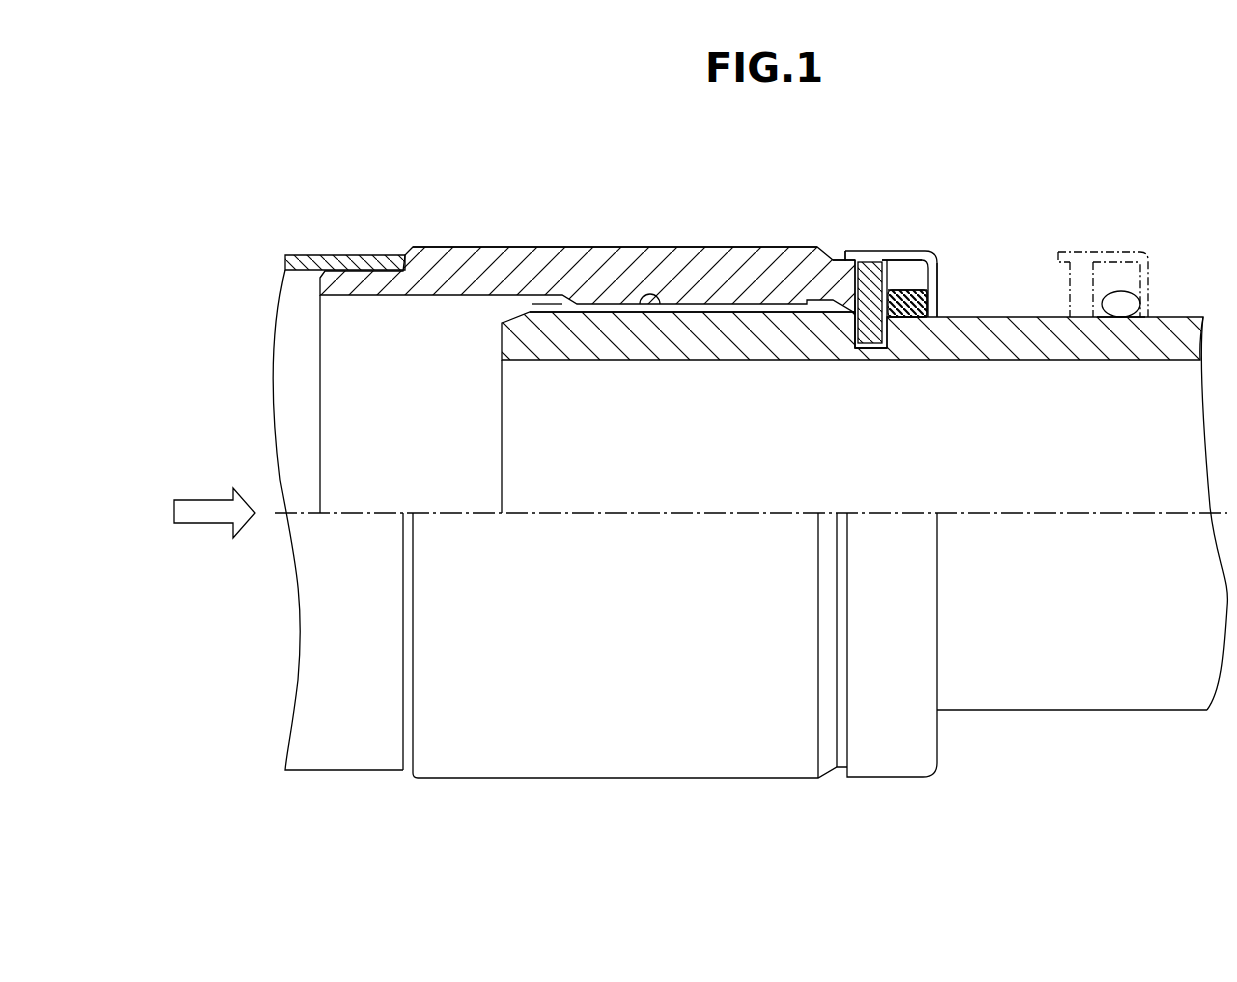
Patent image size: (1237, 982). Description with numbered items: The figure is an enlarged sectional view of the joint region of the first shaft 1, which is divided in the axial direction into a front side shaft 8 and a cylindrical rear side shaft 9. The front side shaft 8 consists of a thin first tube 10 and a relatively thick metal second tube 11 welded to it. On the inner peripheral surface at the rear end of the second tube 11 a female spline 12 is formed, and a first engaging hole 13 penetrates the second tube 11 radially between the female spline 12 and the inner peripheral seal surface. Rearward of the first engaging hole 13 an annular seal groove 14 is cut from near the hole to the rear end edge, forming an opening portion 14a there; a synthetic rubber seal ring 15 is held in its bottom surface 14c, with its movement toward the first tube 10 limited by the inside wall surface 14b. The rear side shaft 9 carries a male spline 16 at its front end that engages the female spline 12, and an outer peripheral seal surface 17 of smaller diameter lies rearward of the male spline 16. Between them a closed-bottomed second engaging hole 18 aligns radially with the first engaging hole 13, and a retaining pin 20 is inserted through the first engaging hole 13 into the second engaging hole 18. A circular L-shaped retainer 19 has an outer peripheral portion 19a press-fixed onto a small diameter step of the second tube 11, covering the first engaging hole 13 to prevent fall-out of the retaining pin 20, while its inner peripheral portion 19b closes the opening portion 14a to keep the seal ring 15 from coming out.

The first shaft 1 is at (558, 787).
The front side shaft 8 is at (446, 247).
The rear side shaft 9 is at (1137, 712).
The first tube 10 is at (323, 256).
The second tube 11 is at (592, 258).
The female spline 12 is at (700, 318).
The first engaging hole 13 is at (845, 258).
The annular seal groove 14 is at (895, 258).
The opening portion 14a is at (928, 292).
The inside wall surface 14b is at (890, 320).
The bottom surface 14c is at (915, 290).
The seal ring 15 is at (900, 318).
The male spline 16 is at (645, 308).
The outer peripheral seal surface 17 is at (912, 318).
The second engaging hole 18 is at (863, 345).
The retainer 19 is at (878, 253).
The outer peripheral portion 19a is at (891, 253).
The inner peripheral portion 19b is at (940, 300).
The retaining pin 20 is at (855, 330).